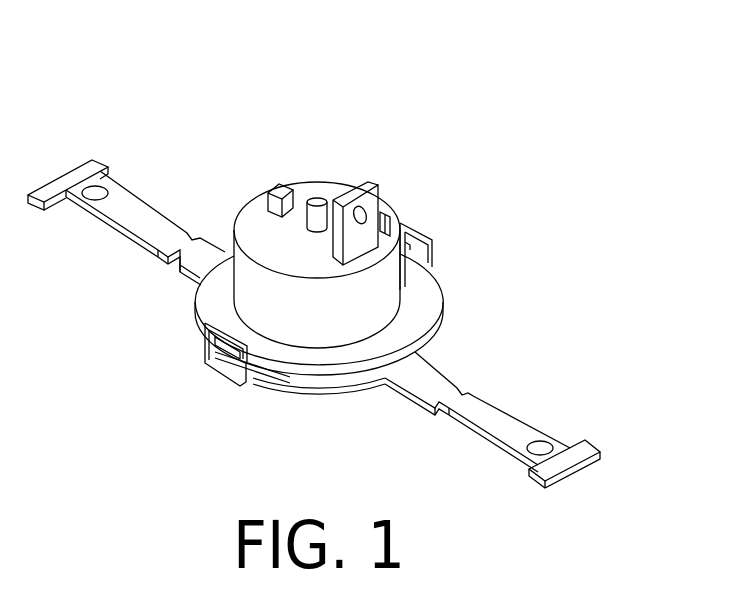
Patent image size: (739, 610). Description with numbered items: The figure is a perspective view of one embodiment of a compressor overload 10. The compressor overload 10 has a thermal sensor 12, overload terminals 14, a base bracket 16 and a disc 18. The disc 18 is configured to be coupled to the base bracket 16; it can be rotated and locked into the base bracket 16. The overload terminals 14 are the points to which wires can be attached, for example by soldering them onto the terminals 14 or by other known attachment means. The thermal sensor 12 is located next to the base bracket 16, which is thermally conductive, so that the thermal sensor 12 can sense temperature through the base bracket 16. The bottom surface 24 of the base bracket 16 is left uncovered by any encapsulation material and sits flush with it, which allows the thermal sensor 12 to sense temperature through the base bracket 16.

The compressor overload 10 is at (345, 253).
The thermal sensor 12 is at (387, 303).
The overload terminals 14 is at (287, 183).
The base bracket 16 is at (503, 418).
The disc 18 is at (217, 307).
The bottom surface 24 is at (270, 390).